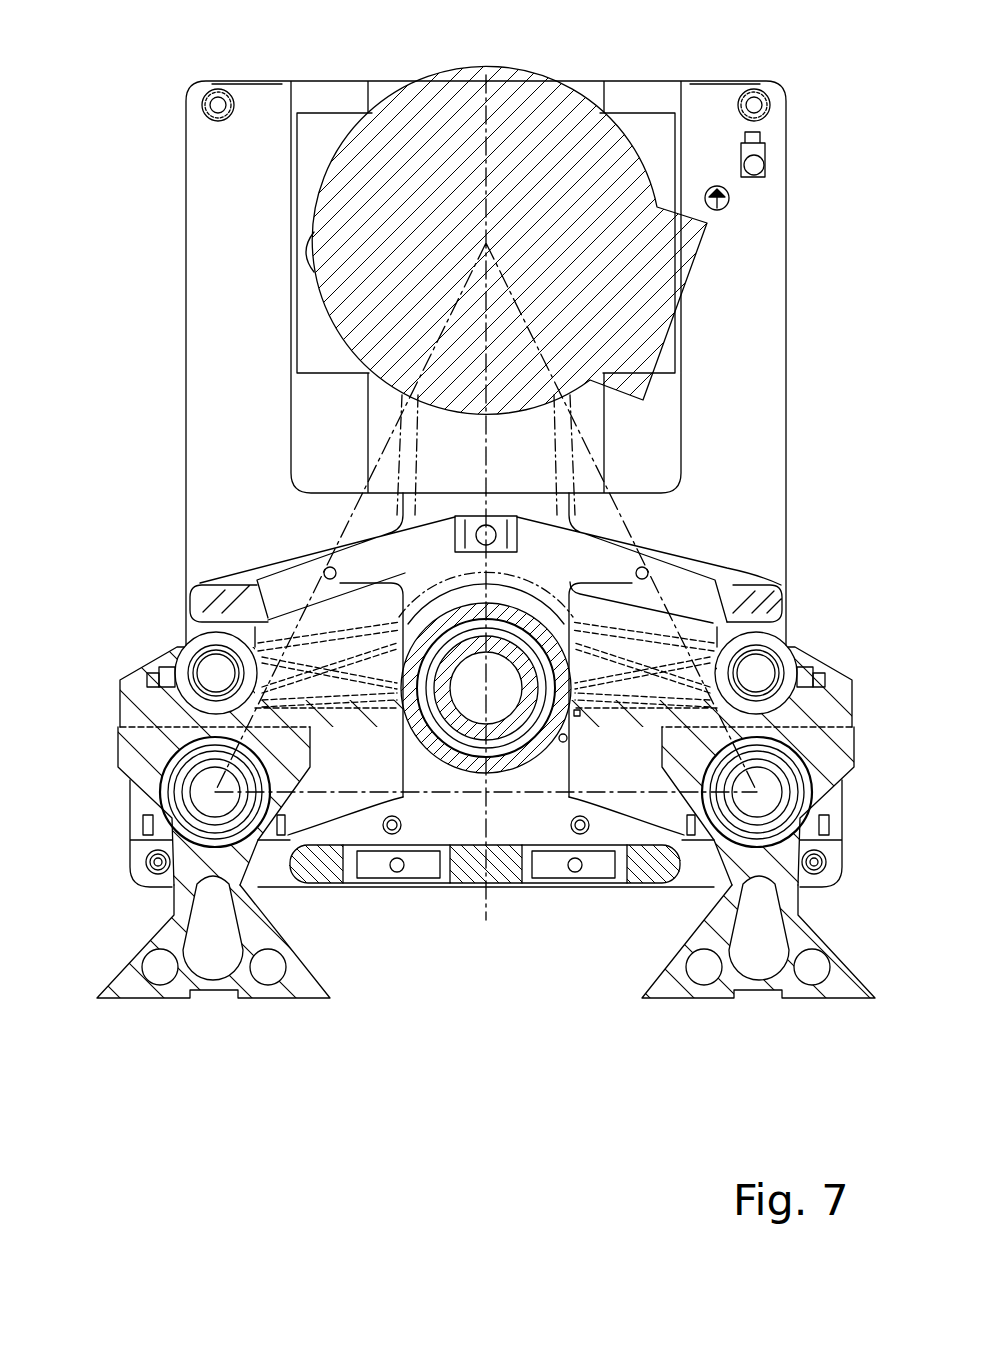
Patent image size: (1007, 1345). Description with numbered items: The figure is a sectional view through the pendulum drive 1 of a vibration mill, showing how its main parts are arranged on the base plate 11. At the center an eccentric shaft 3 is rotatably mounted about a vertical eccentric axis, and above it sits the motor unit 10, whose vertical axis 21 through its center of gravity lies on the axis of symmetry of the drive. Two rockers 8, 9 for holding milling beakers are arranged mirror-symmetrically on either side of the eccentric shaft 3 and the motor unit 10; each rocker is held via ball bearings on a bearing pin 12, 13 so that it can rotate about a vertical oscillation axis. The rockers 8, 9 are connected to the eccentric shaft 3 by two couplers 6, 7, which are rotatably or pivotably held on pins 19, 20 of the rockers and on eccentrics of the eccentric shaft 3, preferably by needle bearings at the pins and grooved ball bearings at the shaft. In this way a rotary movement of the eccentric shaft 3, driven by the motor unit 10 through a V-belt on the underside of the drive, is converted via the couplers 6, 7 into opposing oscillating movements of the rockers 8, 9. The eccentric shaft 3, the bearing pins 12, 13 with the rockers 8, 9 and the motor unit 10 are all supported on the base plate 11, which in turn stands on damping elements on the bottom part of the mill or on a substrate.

The pendulum drive 1 is at (352, 1061).
The eccentric shaft 3 is at (471, 707).
The coupler 6 is at (440, 516).
The coupler 7 is at (565, 675).
The rocker 8 is at (172, 908).
The rocker 9 is at (790, 910).
The motor unit 10 is at (455, 123).
The base plate 11 is at (232, 333).
The bearing pin 12 is at (212, 788).
The bearing pin 13 is at (767, 795).
The pin 19 is at (195, 668).
The pin 20 is at (770, 665).
The vertical axis 21 is at (486, 243).